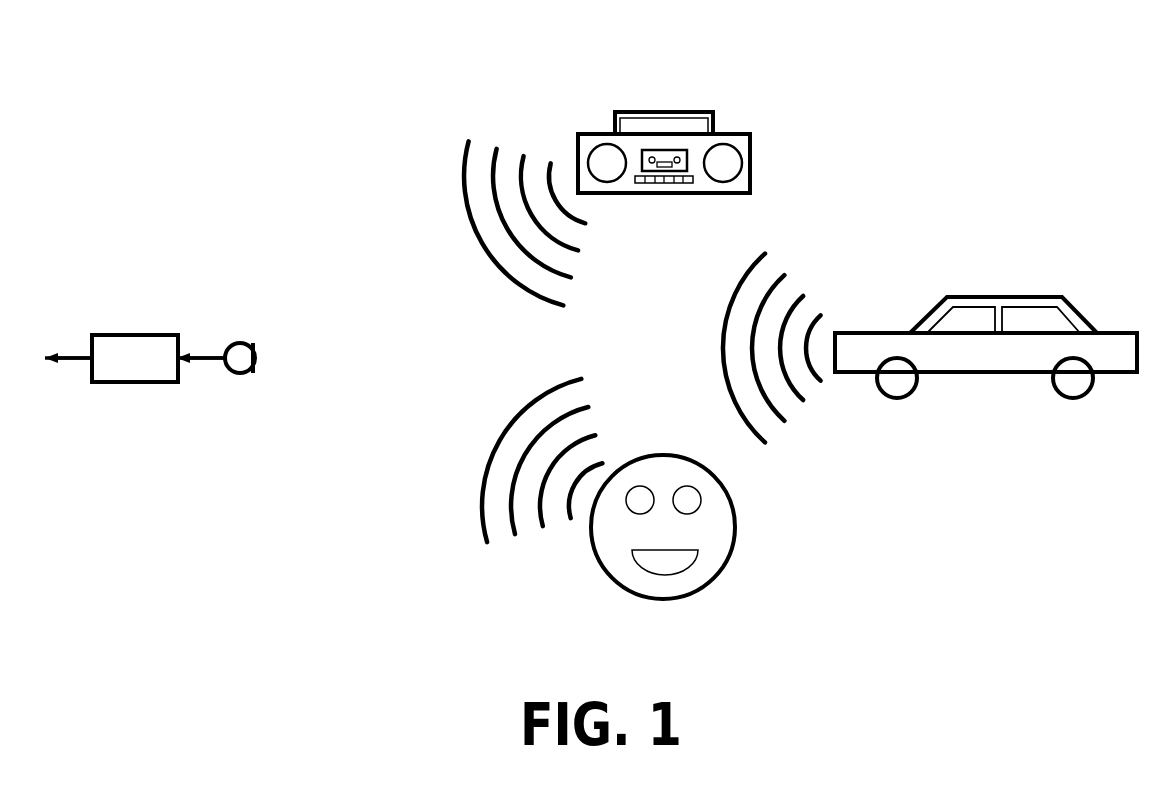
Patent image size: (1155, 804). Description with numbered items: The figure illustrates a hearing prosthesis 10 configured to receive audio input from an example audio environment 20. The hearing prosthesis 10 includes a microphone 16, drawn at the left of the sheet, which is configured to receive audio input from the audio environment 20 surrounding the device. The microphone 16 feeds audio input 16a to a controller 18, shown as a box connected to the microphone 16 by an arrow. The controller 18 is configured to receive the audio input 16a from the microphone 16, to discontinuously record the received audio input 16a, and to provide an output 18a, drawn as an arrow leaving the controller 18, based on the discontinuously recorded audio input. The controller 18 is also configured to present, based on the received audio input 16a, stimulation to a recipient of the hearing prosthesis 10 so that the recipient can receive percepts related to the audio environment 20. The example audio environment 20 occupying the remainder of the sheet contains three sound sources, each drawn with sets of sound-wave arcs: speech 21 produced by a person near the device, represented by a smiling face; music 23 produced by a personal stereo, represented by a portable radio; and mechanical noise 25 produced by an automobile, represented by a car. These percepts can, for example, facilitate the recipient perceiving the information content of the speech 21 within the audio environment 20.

The hearing prosthesis 10 is at (257, 252).
The microphone 16 is at (256, 359).
The audio input 16a is at (205, 356).
The controller 18 is at (135, 358).
The output 18a is at (75, 356).
The audio environment 20 is at (502, 354).
The speech 21 is at (461, 543).
The music 23 is at (458, 121).
The mechanical noise 25 is at (813, 264).